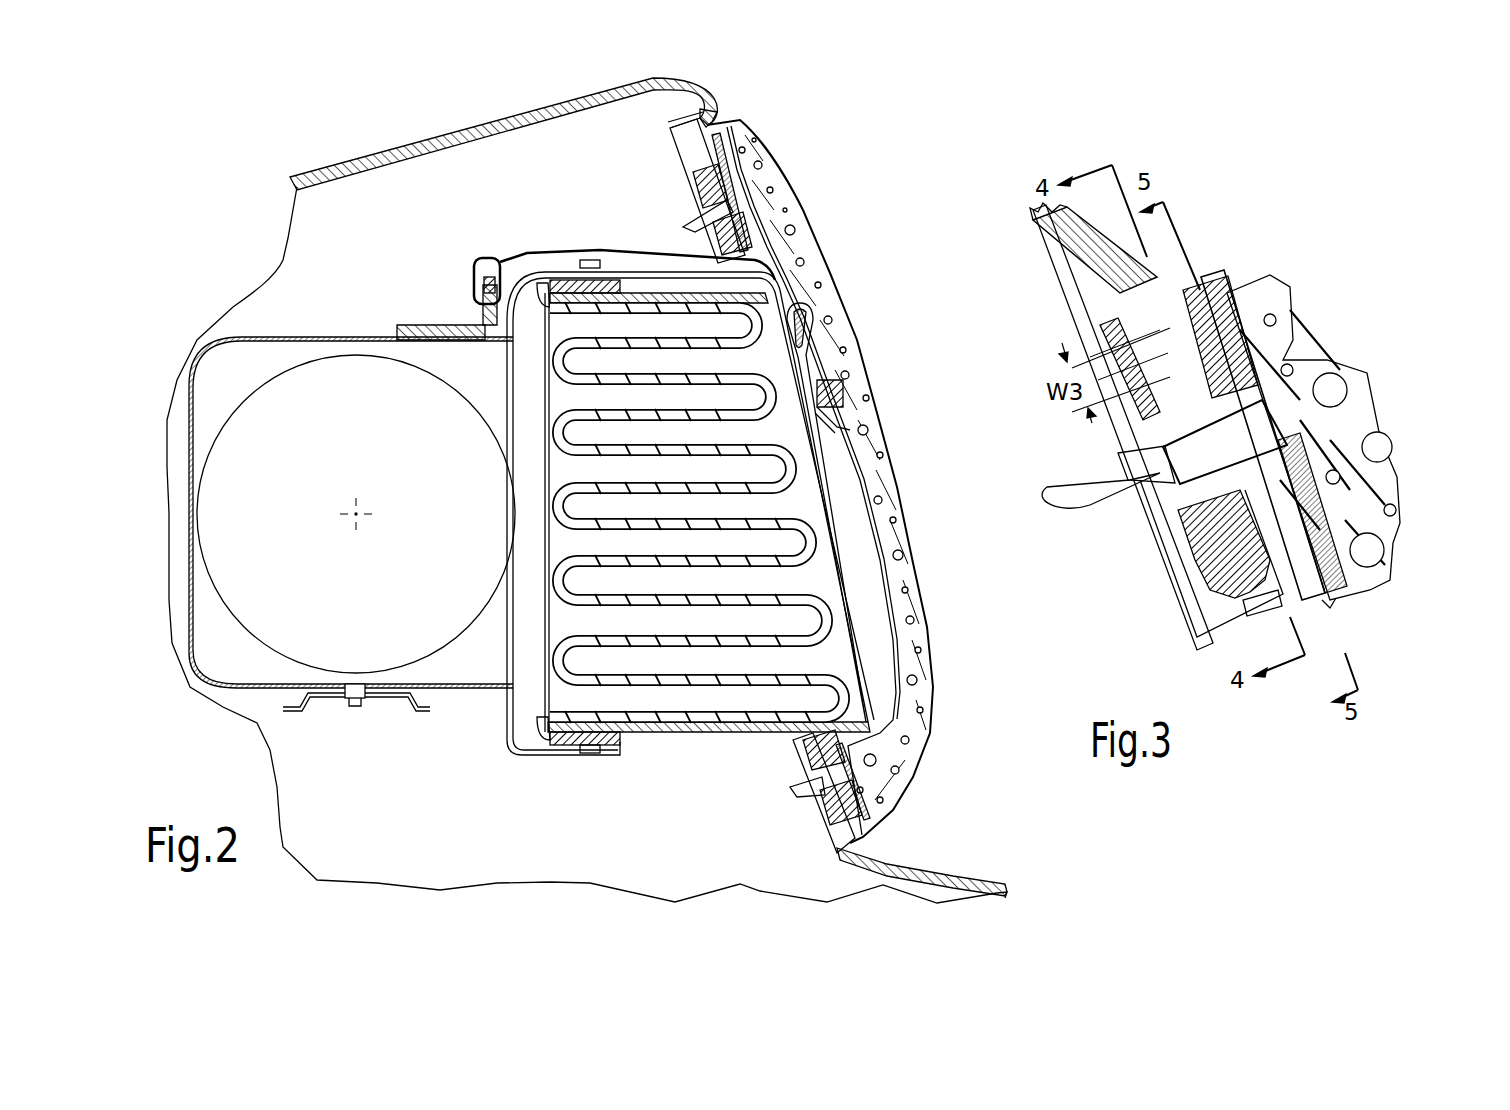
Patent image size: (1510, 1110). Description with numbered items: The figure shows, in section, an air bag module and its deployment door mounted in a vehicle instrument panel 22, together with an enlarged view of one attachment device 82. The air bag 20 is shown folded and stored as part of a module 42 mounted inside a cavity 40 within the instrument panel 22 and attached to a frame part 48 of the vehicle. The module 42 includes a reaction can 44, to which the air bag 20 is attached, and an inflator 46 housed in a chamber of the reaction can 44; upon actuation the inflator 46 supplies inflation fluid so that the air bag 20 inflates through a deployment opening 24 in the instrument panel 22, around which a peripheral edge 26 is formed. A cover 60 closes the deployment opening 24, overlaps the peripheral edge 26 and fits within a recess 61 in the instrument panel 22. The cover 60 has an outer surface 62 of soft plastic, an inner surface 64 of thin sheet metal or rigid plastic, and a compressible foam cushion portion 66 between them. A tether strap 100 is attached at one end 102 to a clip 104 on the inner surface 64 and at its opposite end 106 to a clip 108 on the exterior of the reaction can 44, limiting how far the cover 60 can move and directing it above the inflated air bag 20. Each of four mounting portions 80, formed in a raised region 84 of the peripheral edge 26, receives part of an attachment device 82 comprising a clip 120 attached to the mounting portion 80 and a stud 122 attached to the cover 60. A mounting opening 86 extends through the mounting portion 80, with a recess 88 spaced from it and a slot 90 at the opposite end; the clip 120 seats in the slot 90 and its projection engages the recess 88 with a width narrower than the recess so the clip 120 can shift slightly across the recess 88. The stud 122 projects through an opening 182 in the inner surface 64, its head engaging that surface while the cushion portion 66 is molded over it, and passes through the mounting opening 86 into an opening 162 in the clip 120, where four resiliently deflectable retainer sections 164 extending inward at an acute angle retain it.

In FIG. 2, the air bag 20 is at (688, 645).
In FIG. 2, the instrument panel 22 is at (585, 90).
In FIG. 3, the instrument panel 22 is at (1050, 238).
In FIG. 2, the deployment opening 24 is at (800, 247).
In FIG. 3, the deployment opening 24 is at (1257, 613).
In FIG. 2, the peripheral edge 26 is at (773, 253).
In FIG. 3, the peripheral edge 26 is at (1233, 537).
In FIG. 2, the cavity 40 is at (527, 160).
In FIG. 2, the module 42 is at (447, 303).
In FIG. 2, the reaction can 44 is at (320, 340).
In FIG. 2, the inflator 46 is at (257, 643).
In FIG. 2, the frame part 48 is at (323, 697).
In FIG. 2, the cover 60 is at (762, 141).
In FIG. 3, the cover 60 is at (1410, 587).
In FIG. 2, the recess 61 is at (708, 115).
In FIG. 2, the outer surface 62 is at (747, 220).
In FIG. 2, the inner surface 64 is at (713, 150).
In FIG. 3, the inner surface 64 is at (1330, 597).
In FIG. 2, the cushion portion 66 is at (813, 277).
In FIG. 3, the cushion portion 66 is at (1333, 423).
In FIG. 2, the mounting portion 80 is at (687, 167).
In FIG. 3, the mounting portion 80 is at (1180, 577).
In FIG. 2, the attachment device 82 is at (697, 207).
In FIG. 3, the attachment device 82 is at (1163, 510).
In FIG. 3, the raised region 84 is at (1117, 310).
In FIG. 3, the mounting opening 86 is at (1267, 373).
In FIG. 3, the recess 88 is at (1172, 318).
In FIG. 3, the slot 90 is at (1273, 600).
In FIG. 2, the tether strap 100 is at (670, 253).
In FIG. 2, the end 102 is at (810, 413).
In FIG. 2, the clip 104 is at (813, 327).
In FIG. 2, the opposite end 106 is at (530, 257).
In FIG. 2, the clip 108 is at (488, 273).
In FIG. 3, the clip 120 is at (1300, 567).
In FIG. 3, the stud 122 is at (1137, 447).
In FIG. 3, the opening 162 is at (1173, 520).
In FIG. 3, the retainer section 164 is at (1083, 490).
In FIG. 3, the opening 182 is at (1312, 380).